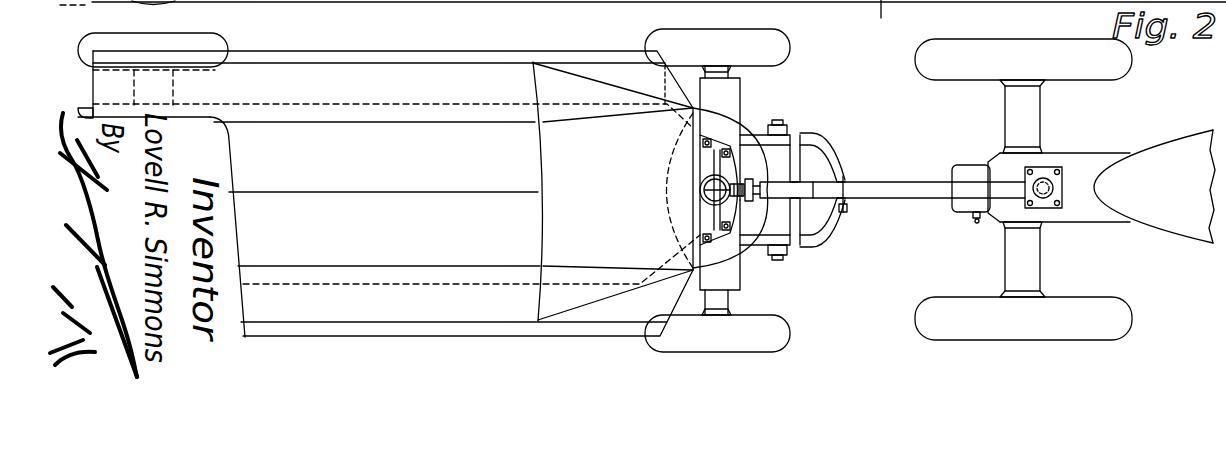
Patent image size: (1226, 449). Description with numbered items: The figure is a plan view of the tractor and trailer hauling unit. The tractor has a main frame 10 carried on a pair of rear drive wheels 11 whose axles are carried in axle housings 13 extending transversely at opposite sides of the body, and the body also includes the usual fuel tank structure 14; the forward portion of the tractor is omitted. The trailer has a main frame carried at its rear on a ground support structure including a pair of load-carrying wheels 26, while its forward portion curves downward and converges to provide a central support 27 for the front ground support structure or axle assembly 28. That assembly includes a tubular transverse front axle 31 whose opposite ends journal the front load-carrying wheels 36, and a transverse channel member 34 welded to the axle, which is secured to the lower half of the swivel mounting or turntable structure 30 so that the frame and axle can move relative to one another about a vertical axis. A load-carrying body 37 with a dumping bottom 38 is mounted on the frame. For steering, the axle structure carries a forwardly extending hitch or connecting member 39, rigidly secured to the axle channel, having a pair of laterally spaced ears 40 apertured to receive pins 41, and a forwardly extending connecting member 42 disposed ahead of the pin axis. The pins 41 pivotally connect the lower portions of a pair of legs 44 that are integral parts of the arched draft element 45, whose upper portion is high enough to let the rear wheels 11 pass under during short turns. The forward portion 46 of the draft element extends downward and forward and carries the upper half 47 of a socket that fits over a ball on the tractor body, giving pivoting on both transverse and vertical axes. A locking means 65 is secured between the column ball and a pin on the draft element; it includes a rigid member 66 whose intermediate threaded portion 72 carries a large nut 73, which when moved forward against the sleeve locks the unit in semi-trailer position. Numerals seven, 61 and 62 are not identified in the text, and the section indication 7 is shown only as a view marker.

The section line indicator 7 is at (865, 12).
The main frame 10 is at (1111, 147).
The rear drive wheels 11 is at (1115, 70).
The axle housings 13 is at (1028, 100).
The fuel tank structure 14 is at (1167, 153).
The load-carrying wheels 26 is at (217, 42).
The central support 27 is at (770, 190).
The front ground support structure or axle assembly 28 is at (740, 98).
The swivel mounting or turntable structure 30 is at (672, 166).
The transverse front axle 31 is at (730, 302).
The transverse channel member 34 is at (730, 278).
The load-carrying wheels 36 is at (775, 40).
The load-carrying body 37 is at (466, 52).
The dumping bottom 38 is at (455, 199).
The hitch or connecting member 39 is at (748, 135).
The ears 40 is at (785, 140).
The pins 41 is at (777, 122).
The connecting member 42 is at (845, 212).
The legs 44 is at (818, 140).
The arched draft element 45 is at (921, 169).
The forward portion of the draft element 46 is at (1003, 188).
The upper half of a socket 47 is at (1040, 175).
The bolt 61 is at (703, 155).
The bolt 62 is at (703, 233).
The locking means 65 is at (790, 190).
The rigid member 66 is at (700, 186).
The intermediate threaded portion 72 is at (722, 192).
The large nut 73 is at (765, 230).